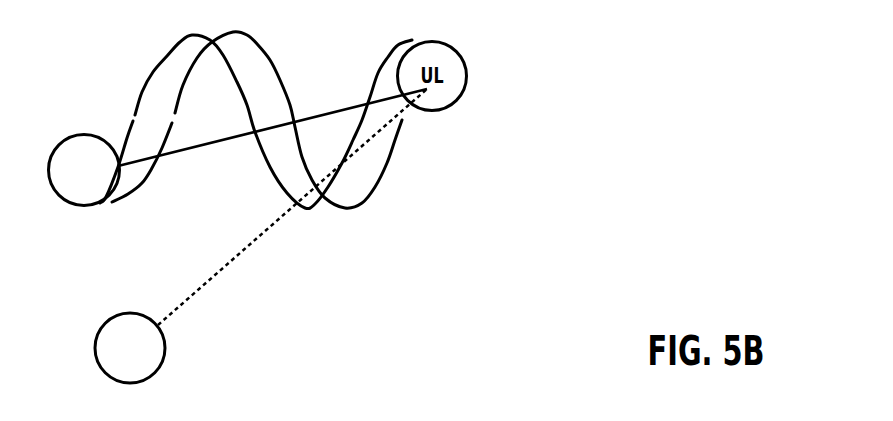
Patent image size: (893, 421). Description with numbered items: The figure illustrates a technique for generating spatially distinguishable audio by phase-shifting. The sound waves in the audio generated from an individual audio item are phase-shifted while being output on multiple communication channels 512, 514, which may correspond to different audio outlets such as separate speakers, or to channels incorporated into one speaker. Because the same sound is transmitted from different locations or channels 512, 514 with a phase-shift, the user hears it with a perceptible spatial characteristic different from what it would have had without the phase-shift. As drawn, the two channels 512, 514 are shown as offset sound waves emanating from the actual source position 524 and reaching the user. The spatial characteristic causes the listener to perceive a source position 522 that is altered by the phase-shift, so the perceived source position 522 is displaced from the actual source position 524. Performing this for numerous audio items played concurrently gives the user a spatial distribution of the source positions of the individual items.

The communication channel 512 is at (225, 122).
The communication channel 514 is at (221, 147).
The actual source position 524 is at (238, 147).
The perceived source position 522 is at (261, 236).